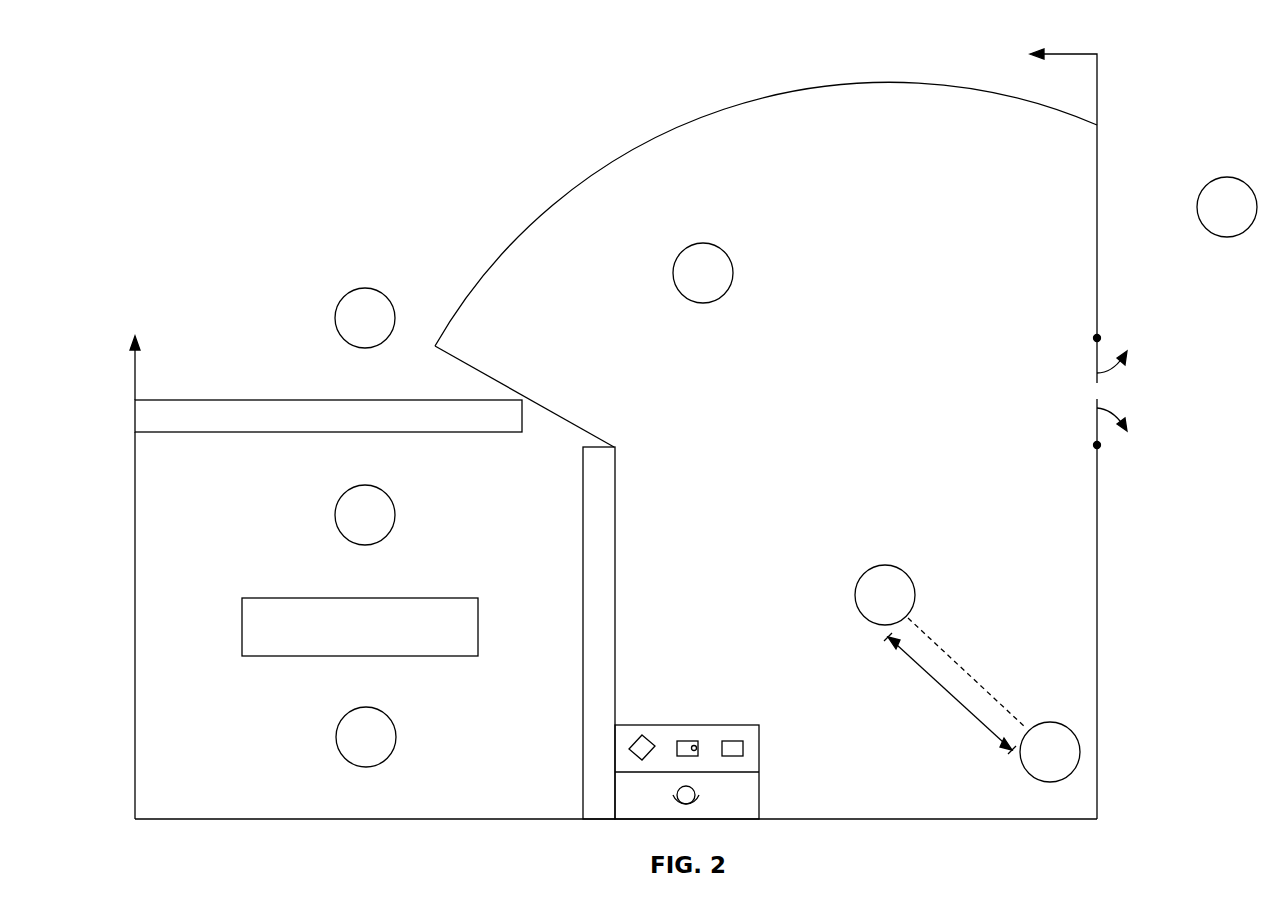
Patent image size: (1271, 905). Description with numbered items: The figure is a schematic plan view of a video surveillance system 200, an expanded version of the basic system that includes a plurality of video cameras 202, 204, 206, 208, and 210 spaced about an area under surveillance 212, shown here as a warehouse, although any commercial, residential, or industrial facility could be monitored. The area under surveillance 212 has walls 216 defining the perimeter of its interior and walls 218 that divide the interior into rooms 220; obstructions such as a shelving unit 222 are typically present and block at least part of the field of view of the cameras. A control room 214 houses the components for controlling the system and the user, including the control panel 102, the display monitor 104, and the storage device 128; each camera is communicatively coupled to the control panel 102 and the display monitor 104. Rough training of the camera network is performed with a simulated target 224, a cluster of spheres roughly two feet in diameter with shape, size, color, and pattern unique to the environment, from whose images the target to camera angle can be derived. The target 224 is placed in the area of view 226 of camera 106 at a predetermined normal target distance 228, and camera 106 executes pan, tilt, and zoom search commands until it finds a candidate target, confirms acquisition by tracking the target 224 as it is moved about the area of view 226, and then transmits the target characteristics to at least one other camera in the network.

The video surveillance system 200 is at (206, 78).
The video camera 202 is at (1227, 177).
The video camera 204 is at (366, 707).
The video camera 206 is at (365, 485).
The video camera 208 is at (365, 288).
The video camera 210 is at (703, 243).
The area under surveillance 212 is at (922, 290).
The control room 214 is at (772, 750).
The walls 216 is at (133, 745).
The walls 218 is at (374, 410).
The rooms 220 is at (663, 434).
The shelving unit 222 is at (312, 605).
The simulated target 224 is at (1056, 722).
The area of view 226 is at (888, 84).
The predetermined normal target distance 228 is at (946, 697).
The display monitor 104 is at (650, 738).
The control panel 102 is at (690, 741).
The storage device 128 is at (742, 741).
The camera 106 is at (885, 565).